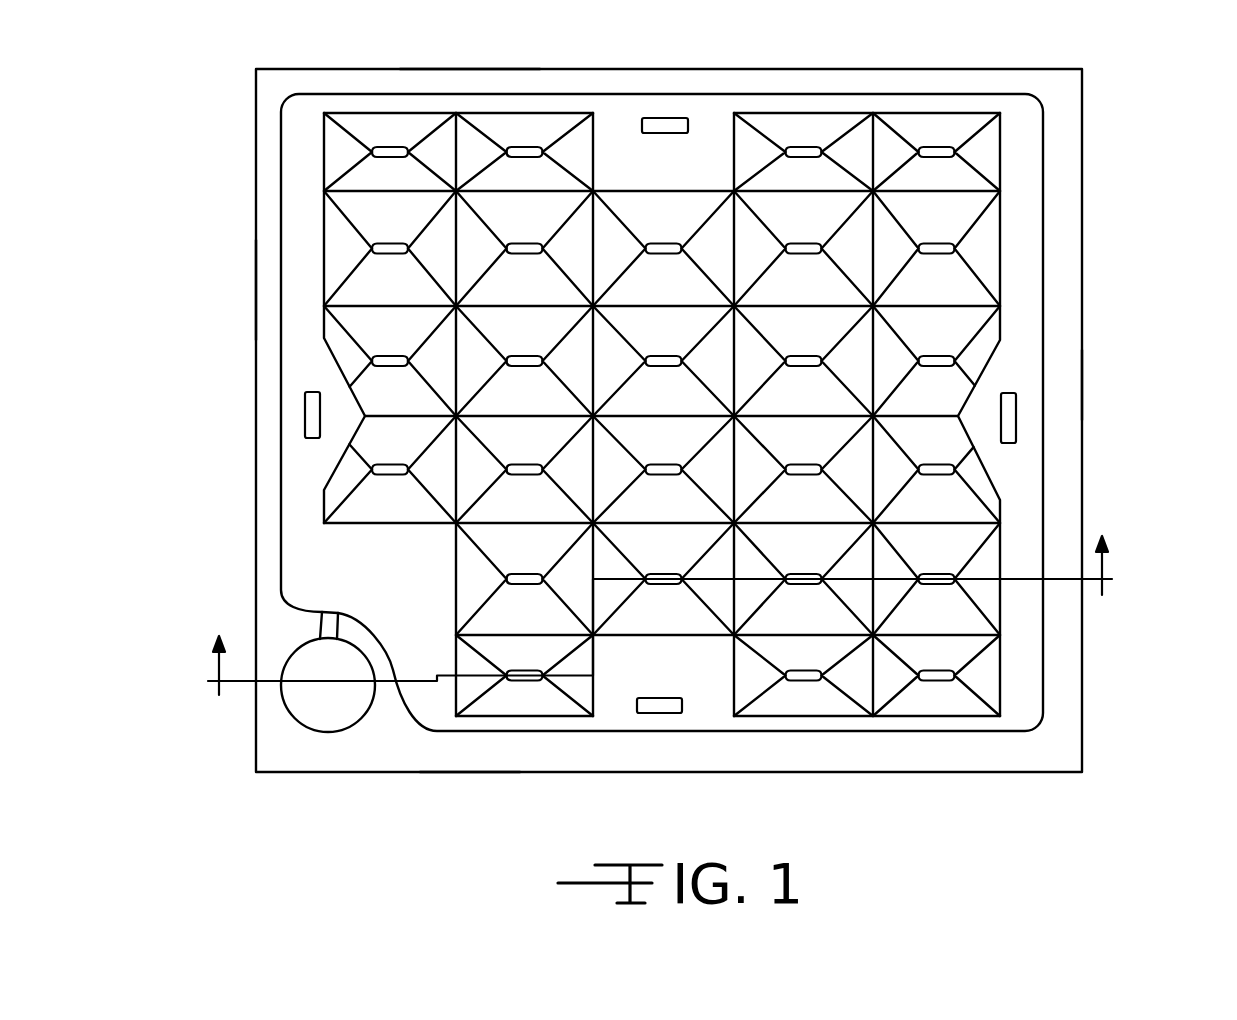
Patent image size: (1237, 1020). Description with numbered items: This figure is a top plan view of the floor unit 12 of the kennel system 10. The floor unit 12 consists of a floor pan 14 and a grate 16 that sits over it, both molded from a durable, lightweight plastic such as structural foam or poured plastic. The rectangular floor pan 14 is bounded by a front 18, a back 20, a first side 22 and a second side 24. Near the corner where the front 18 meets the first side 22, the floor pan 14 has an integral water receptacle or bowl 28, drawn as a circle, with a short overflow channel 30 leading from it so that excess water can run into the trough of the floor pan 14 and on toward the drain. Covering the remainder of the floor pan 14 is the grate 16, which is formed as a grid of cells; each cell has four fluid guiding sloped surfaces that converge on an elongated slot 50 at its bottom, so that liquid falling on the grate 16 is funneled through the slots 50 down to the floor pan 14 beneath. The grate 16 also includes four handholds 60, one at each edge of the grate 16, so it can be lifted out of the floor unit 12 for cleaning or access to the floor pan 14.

The kennel system 10 is at (1114, 131).
The floor unit 12 is at (1084, 222).
The floor pan 14 is at (1084, 300).
The grate 16 is at (1020, 319).
The front 18 is at (470, 772).
The back 20 is at (465, 69).
The first side 22 is at (256, 290).
The second side 24 is at (1084, 385).
The water receptacle or bowl 28 is at (300, 718).
The overflow channel 30 is at (300, 627).
The elongated slots 50 is at (935, 148).
The handholds 60 is at (664, 118).